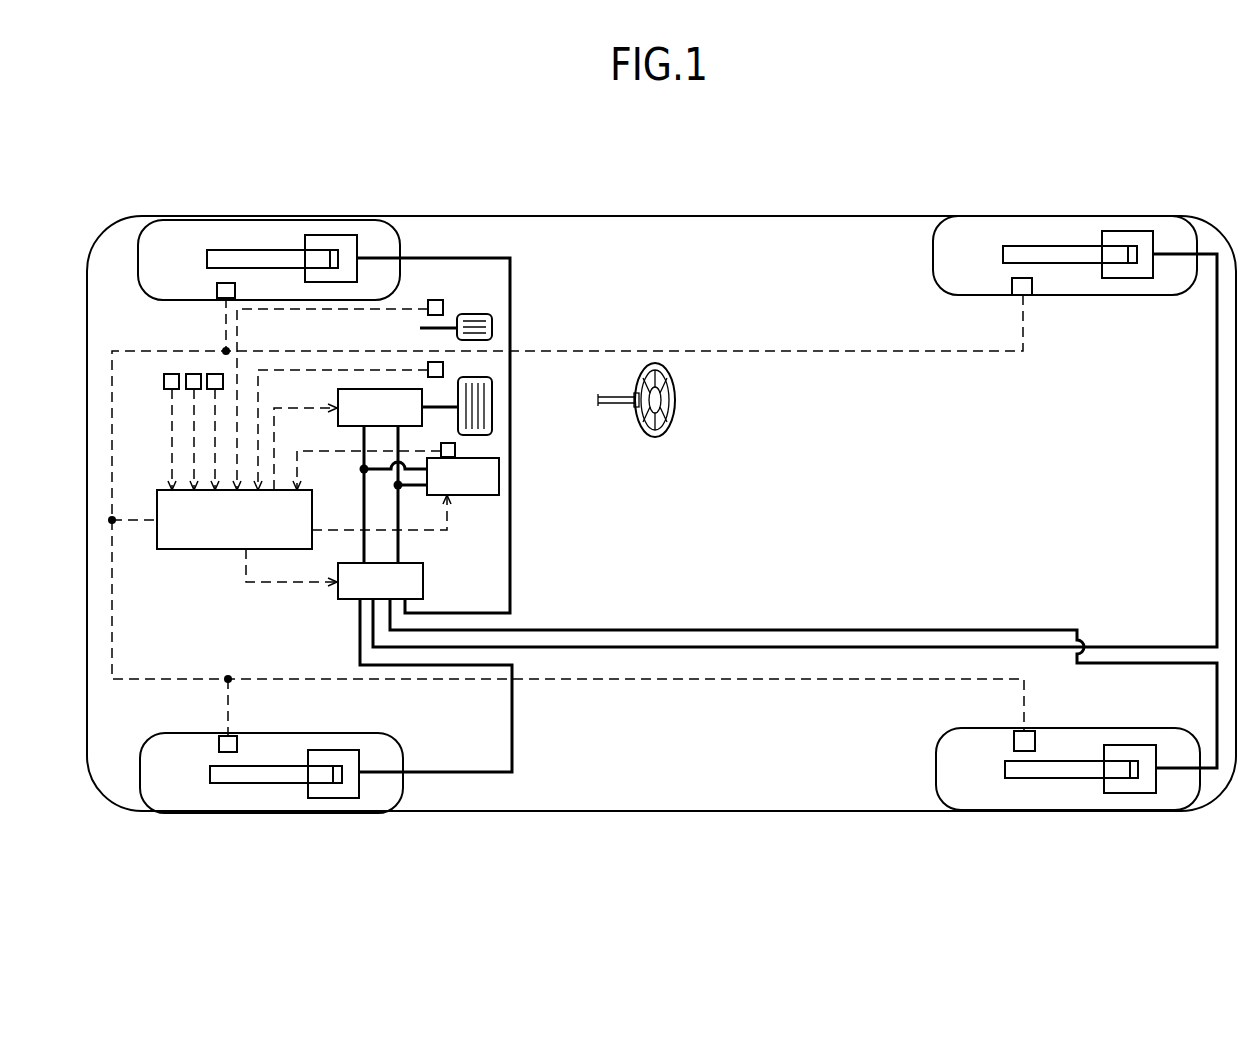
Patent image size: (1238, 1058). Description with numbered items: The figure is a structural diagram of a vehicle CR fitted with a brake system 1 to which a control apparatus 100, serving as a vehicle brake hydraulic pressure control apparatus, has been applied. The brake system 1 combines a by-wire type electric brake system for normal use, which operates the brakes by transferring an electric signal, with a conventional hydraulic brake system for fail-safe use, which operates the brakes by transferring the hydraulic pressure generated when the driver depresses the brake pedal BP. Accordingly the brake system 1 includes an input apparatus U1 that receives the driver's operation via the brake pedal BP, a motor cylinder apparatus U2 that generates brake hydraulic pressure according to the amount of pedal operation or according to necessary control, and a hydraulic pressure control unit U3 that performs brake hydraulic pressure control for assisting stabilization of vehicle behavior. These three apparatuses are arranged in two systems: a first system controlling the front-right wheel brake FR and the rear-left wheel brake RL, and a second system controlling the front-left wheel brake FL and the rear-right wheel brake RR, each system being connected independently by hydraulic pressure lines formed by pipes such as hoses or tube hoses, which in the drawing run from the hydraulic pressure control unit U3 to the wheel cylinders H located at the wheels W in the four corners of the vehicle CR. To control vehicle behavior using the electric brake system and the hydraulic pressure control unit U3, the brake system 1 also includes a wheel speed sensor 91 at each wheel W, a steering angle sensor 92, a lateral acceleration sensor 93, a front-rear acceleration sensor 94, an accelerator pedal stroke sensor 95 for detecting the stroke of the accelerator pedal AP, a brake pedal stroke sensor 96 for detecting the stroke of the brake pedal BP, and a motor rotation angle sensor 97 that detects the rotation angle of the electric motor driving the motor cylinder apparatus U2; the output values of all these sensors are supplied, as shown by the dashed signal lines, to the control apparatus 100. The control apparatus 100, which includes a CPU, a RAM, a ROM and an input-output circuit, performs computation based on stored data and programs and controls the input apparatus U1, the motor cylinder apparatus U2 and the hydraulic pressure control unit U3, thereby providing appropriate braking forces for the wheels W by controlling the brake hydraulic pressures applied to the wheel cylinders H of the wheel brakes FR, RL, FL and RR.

The brake system 1 is at (138, 432).
The wheel speed sensor 91 is at (217, 290).
The steering angle sensor 92 is at (172, 374).
The lateral acceleration sensor 93 is at (194, 374).
The front-rear acceleration sensor 94 is at (215, 374).
The accelerator pedal stroke sensor 95 is at (440, 300).
The brake pedal stroke sensor 96 is at (443, 369).
The motor rotation angle sensor 97 is at (455, 449).
The control apparatus 100 is at (202, 549).
The input apparatus U1 is at (375, 389).
The motor cylinder apparatus U2 is at (462, 497).
The hydraulic pressure control unit U3 is at (423, 580).
The accelerator pedal AP is at (478, 314).
The brake pedal BP is at (492, 415).
The vehicle CR is at (697, 206).
The wheel W is at (268, 232).
The wheel cylinder H is at (330, 241).
The front-right wheel brake FR is at (228, 258).
The front-left wheel brake FL is at (230, 778).
The rear-right wheel brake RR is at (1023, 252).
The rear-left wheel brake RL is at (1027, 773).